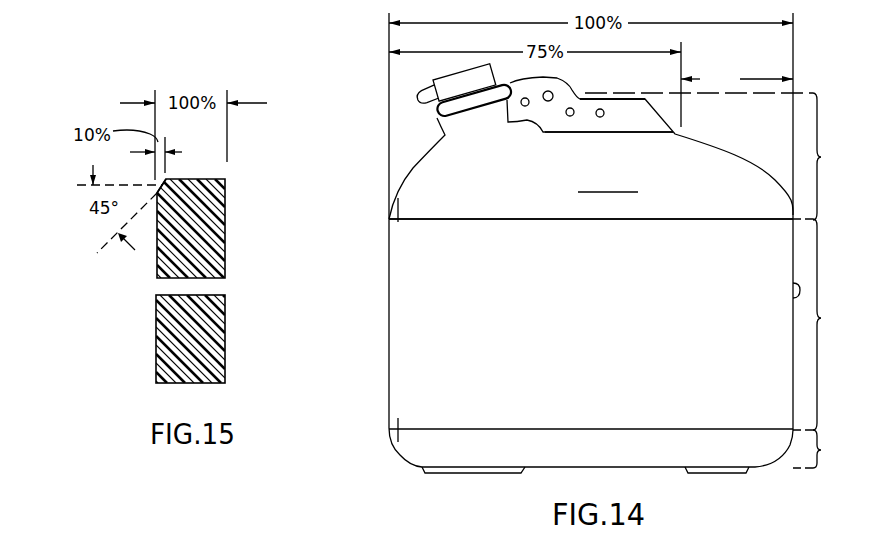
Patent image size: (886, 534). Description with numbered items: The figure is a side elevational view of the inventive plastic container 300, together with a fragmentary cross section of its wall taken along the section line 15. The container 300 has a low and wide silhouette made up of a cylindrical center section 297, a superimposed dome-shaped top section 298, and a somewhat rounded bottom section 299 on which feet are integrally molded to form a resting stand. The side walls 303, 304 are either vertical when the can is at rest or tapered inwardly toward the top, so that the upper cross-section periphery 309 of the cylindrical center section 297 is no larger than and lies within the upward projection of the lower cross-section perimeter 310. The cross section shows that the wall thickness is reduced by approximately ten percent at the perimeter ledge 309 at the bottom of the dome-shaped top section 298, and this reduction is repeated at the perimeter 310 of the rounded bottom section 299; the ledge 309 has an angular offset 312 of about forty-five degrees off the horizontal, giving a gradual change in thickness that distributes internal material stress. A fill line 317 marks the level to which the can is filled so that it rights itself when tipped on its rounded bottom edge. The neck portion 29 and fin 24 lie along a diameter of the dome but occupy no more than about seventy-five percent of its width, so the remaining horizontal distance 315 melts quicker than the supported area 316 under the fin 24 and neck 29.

In FIG. 14, the section line 15 is at (430, 204).
In FIG. 14, the fin 24 is at (562, 90).
In FIG. 14, the neck portion 29 is at (447, 73).
In FIG. 14, the cylindrical center section 297 is at (835, 324).
In FIG. 14, the dome-shaped top section 298 is at (837, 156).
In FIG. 14, the rounded bottom section 299 is at (836, 449).
In FIG. 14, the container 300 is at (476, 176).
In FIG. 14, the side wall 303 is at (389, 297).
In FIG. 14, the side wall 304 is at (763, 310).
In FIG. 14, the upper cross-section periphery 309 is at (478, 218).
In FIG. 15, the upper cross-section periphery 309 is at (158, 194).
In FIG. 14, the lower cross-section perimeter 310 is at (590, 428).
In FIG. 15, the lower cross-section perimeter 310 is at (157, 372).
In FIG. 15, the angular offset 312 is at (89, 239).
In FIG. 14, the remaining horizontal distance 315 is at (737, 79).
In FIG. 14, the supported area 316 is at (610, 79).
In FIG. 14, the fill line 317 is at (621, 188).